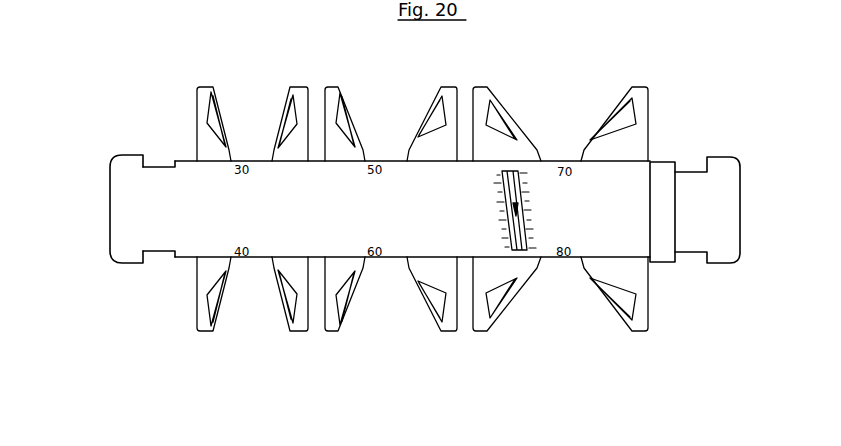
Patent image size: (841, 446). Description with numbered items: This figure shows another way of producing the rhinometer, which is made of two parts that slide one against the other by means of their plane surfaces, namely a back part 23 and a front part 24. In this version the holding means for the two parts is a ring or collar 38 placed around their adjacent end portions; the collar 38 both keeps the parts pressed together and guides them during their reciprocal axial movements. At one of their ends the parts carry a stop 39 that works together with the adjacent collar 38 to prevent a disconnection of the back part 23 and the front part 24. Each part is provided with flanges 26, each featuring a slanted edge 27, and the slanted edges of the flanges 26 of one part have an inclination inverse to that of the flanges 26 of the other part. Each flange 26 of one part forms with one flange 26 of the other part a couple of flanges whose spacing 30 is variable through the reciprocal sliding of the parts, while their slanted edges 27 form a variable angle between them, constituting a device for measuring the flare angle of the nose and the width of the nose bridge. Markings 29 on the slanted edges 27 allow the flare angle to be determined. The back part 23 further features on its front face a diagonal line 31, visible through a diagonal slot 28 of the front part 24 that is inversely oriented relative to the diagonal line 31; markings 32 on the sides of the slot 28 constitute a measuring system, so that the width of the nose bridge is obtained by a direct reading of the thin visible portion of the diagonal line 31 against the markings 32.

The back part 23 is at (127, 210).
The front part 24 is at (203, 107).
The flanges 26 is at (333, 95).
The slanted edge 27 is at (222, 275).
The diagonal slot 28 is at (517, 163).
The markings 29 is at (207, 92).
The spacing 30 is at (247, 143).
The diagonal line 31 is at (518, 255).
The markings 32 is at (543, 255).
The ring or collar 38 is at (665, 180).
The stop 39 is at (143, 157).